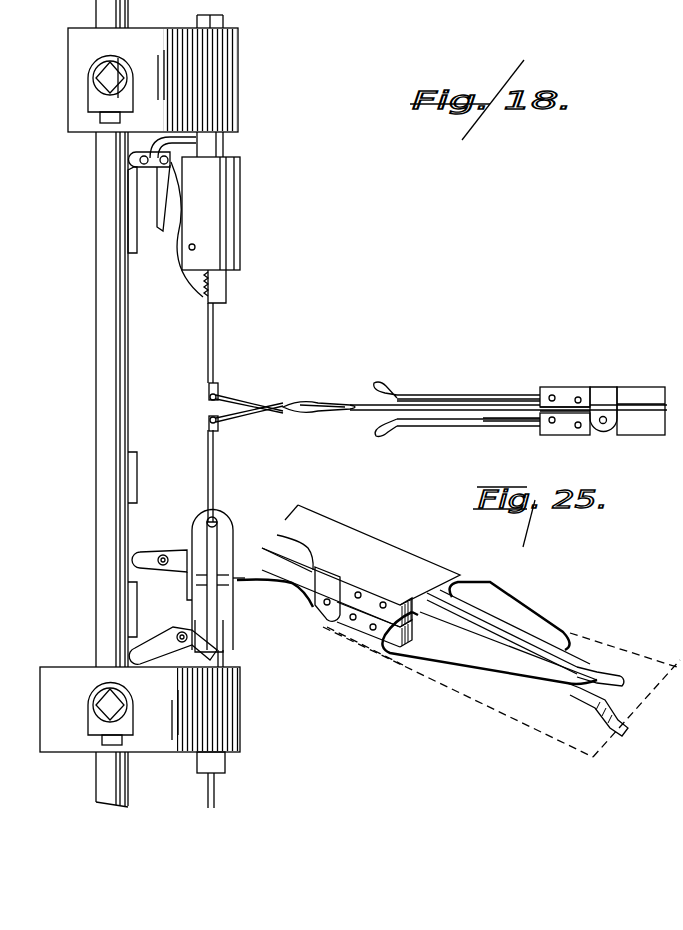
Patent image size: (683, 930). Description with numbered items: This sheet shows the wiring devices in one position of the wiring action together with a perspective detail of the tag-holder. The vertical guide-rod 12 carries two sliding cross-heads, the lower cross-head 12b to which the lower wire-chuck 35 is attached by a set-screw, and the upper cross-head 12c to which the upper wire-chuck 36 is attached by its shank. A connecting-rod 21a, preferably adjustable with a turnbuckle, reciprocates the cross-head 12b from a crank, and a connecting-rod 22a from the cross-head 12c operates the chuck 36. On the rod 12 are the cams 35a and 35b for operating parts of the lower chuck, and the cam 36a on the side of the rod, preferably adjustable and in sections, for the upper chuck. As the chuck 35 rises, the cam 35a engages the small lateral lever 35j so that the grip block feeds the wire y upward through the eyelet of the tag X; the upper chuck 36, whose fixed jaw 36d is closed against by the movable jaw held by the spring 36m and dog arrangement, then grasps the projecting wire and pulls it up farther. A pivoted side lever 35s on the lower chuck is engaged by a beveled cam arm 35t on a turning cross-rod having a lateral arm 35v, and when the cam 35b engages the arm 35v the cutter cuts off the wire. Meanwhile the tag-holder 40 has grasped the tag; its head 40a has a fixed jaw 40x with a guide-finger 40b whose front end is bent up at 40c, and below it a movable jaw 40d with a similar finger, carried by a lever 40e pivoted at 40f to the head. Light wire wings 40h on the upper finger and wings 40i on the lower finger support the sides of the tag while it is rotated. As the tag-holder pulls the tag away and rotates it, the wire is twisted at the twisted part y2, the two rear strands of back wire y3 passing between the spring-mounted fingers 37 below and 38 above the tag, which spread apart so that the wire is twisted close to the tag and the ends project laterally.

In FIG. 18, the vertical guide-rod 12 is at (112, 307).
In FIG. 18, the sliding cross-head 12c is at (238, 92).
In FIG. 18, the sliding cross-head 12b is at (213, 697).
In FIG. 18, the connecting-rod 22a is at (122, 120).
In FIG. 18, the connecting-rod 21a is at (124, 742).
In FIG. 18, the upper wire-chuck 36 is at (240, 202).
In FIG. 18, the cam 36a is at (128, 207).
In FIG. 18, the fixed jaw 36d is at (218, 283).
In FIG. 18, the spring 36m is at (175, 257).
In FIG. 18, the finger 37 is at (217, 388).
In FIG. 18, the finger 38 is at (219, 423).
In FIG. 18, the wire y is at (216, 785).
In FIG. 18, the twisted part y2 is at (268, 406).
In FIG. 18, the back wire y3 is at (213, 320).
In FIG. 18, the lower wire-chuck 35 is at (208, 568).
In FIG. 25, the lower wire-chuck 35 is at (283, 546).
In FIG. 18, the cam 35a is at (128, 463).
In FIG. 18, the cam 35b is at (128, 598).
In FIG. 18, the lateral lever 35j is at (145, 556).
In FIG. 18, the pivoted side lever 35s is at (170, 585).
In FIG. 25, the cam arm 35t is at (228, 662).
In FIG. 18, the lateral arm 35v is at (142, 652).
In FIG. 18, the tag-holder 40 is at (557, 390).
In FIG. 25, the tag-holder 40 is at (407, 535).
In FIG. 18, the head 40a is at (560, 436).
In FIG. 25, the head 40a is at (328, 532).
In FIG. 18, the guide-finger 40b is at (470, 394).
In FIG. 25, the guide-finger 40b is at (527, 642).
In FIG. 18, the bent-up front end 40c is at (383, 383).
In FIG. 25, the bent-up front end 40c is at (597, 672).
In FIG. 25, the movable jaw 40d is at (365, 630).
In FIG. 25, the lever 40e is at (262, 590).
In FIG. 25, the pivot 40f is at (327, 615).
In FIG. 25, the wire wings 40h is at (492, 566).
In FIG. 25, the wings 40i is at (493, 605).
In FIG. 18, the fixed jaw 40x is at (568, 395).
In FIG. 25, the tag X is at (523, 713).